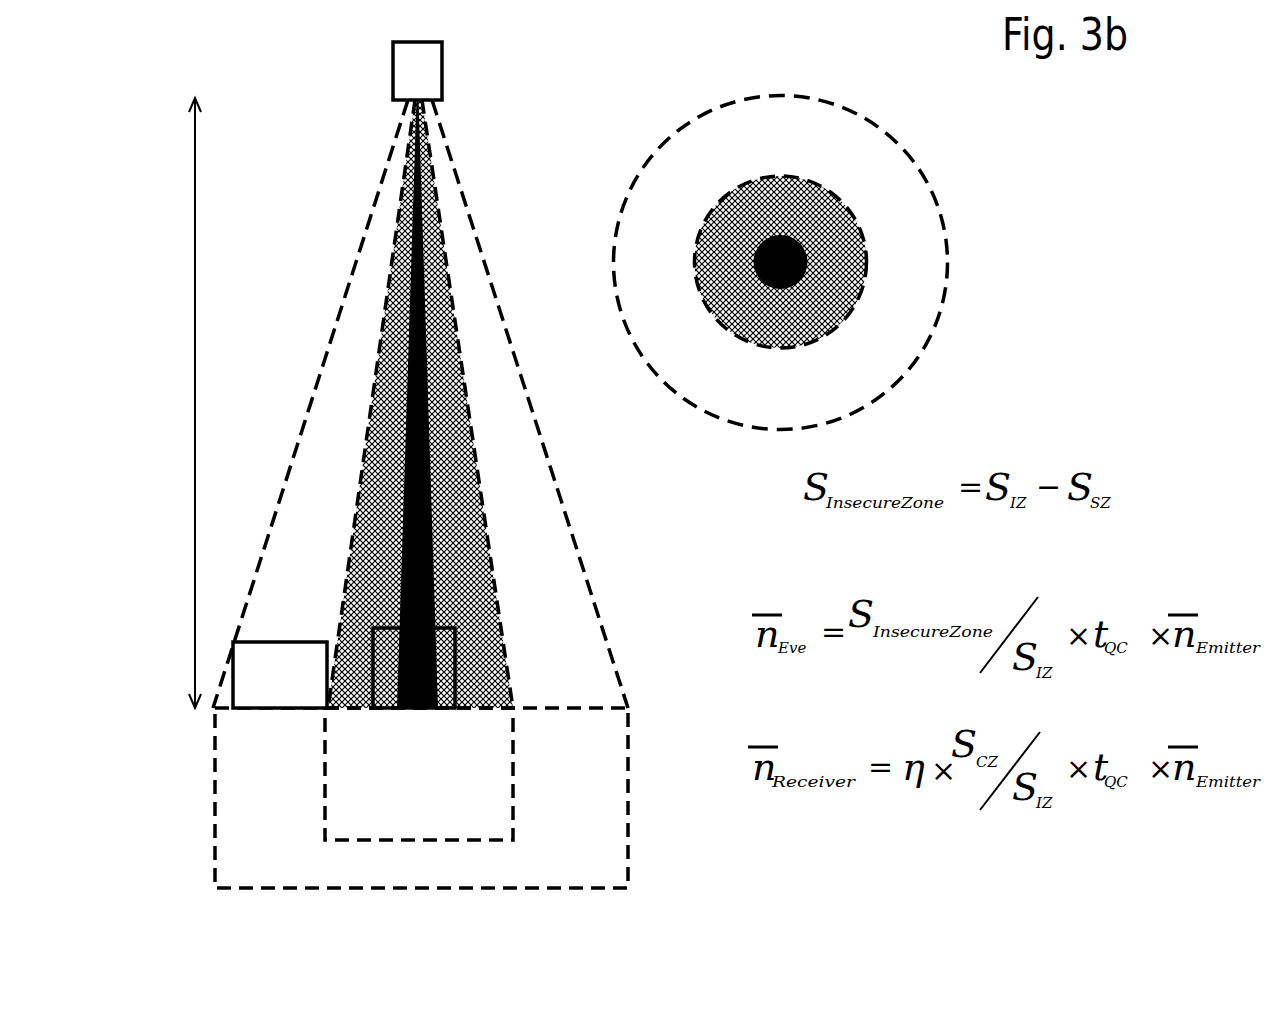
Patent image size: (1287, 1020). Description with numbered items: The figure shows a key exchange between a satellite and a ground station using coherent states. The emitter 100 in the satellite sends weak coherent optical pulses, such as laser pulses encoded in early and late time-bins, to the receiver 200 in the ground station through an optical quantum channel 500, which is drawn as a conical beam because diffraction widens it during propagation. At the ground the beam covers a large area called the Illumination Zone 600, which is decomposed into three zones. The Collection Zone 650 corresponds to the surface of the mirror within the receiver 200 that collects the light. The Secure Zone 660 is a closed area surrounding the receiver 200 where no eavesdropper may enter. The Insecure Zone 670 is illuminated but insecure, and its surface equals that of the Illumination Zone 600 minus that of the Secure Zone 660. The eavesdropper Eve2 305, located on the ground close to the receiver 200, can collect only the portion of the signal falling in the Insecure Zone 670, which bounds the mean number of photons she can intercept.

The emitter 100 is at (506, 71).
The receiver 200 is at (455, 668).
The Eve2 305 is at (280, 675).
The optical quantum channel 500 is at (169, 403).
The Illumination Zone 600 is at (426, 898).
The Collection Zone 650 is at (438, 725).
The Secure Zone 660 is at (418, 840).
The Insecure Zone 670 is at (795, 382).